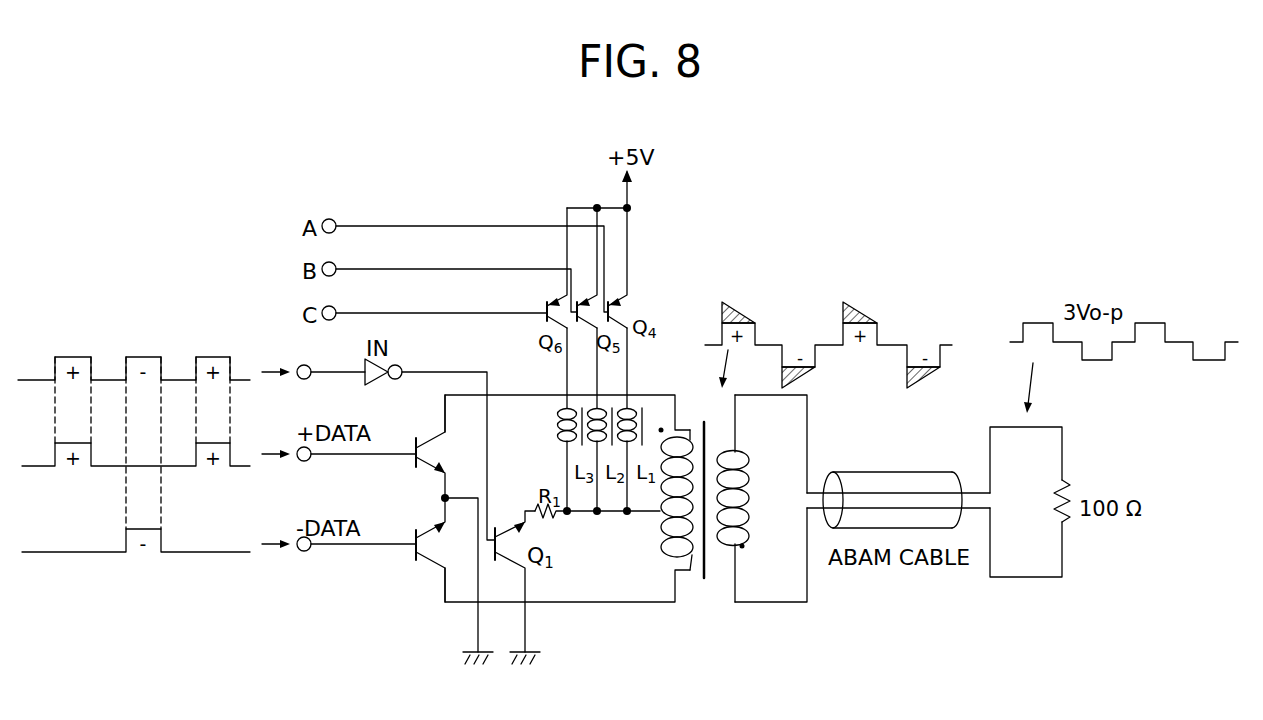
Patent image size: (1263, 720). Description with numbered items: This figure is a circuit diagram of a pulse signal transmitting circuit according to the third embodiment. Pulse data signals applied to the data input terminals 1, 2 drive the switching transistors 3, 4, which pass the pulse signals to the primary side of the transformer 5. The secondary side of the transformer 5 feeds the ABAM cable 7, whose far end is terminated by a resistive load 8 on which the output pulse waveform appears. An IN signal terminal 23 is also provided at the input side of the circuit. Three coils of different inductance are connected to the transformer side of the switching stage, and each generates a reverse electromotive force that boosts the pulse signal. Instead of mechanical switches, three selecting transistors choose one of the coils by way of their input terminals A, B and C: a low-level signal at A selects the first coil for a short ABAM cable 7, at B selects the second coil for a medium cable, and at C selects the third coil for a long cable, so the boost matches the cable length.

The data input terminal 1 is at (308, 461).
The data input terminal 2 is at (308, 551).
The switching transistor 3 is at (412, 436).
The switching transistor 4 is at (418, 550).
The transformer 5 is at (705, 600).
The ABAM cable 7 is at (887, 472).
The 100 ohm terminating resistor 8 is at (1070, 492).
The IN signal input terminal 23 is at (322, 357).